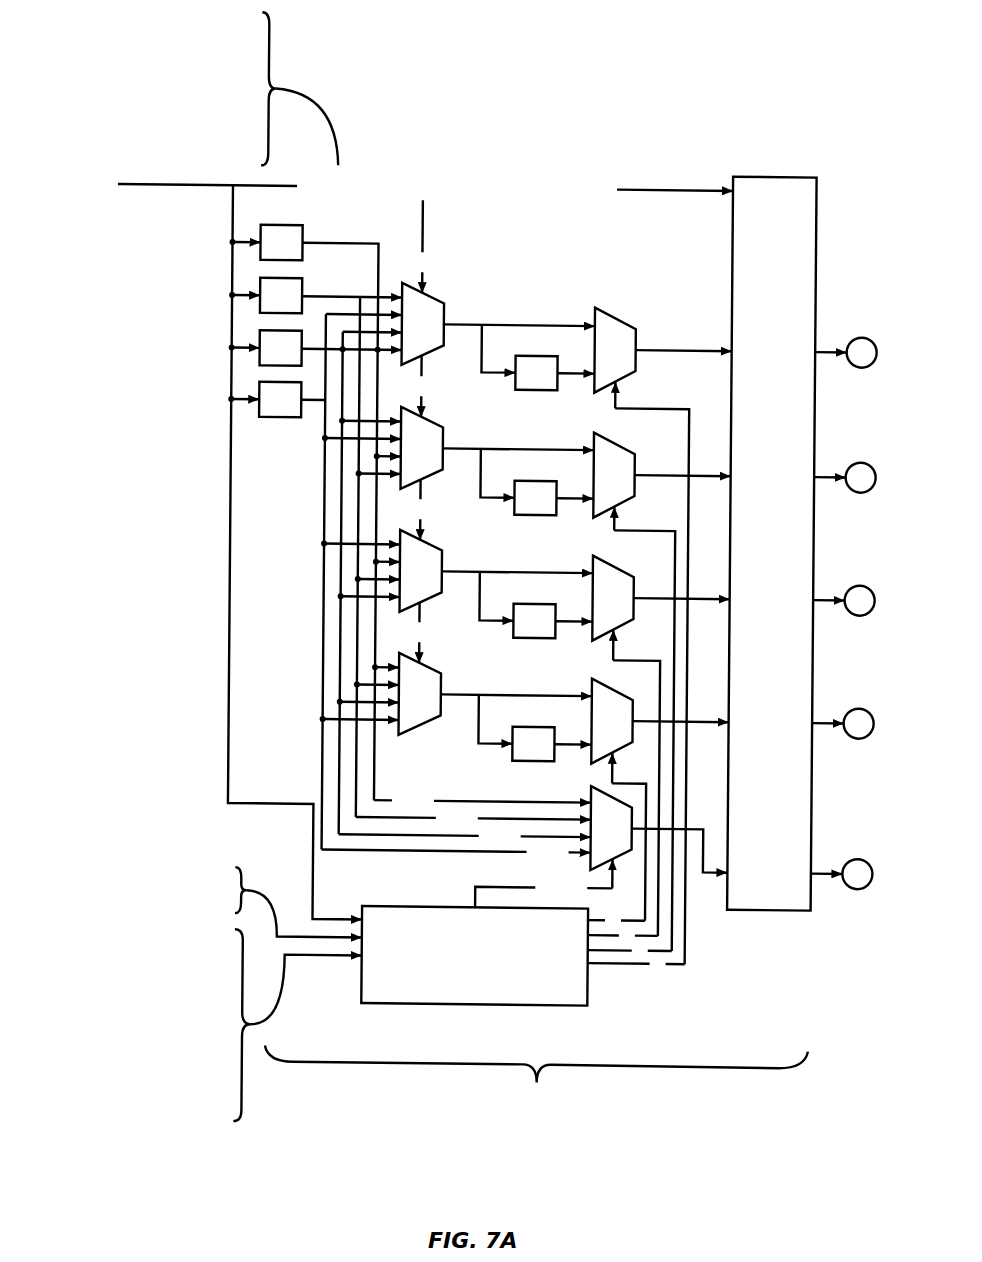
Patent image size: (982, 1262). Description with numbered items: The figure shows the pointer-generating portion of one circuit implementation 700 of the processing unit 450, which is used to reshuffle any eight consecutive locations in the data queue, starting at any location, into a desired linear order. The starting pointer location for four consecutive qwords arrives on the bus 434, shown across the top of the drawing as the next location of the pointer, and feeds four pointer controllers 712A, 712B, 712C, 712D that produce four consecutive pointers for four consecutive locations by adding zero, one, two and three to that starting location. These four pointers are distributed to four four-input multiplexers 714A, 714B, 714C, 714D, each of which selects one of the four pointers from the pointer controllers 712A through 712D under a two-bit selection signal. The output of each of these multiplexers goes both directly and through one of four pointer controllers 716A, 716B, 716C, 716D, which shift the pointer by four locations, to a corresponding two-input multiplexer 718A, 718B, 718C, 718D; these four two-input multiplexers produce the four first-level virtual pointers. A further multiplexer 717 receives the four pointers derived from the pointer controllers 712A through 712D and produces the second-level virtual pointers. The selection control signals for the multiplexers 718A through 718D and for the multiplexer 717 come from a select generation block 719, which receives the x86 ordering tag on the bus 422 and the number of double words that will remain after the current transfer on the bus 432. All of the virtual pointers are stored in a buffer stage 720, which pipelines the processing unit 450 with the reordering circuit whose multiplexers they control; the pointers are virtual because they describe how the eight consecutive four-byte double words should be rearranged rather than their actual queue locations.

The circuit implementation 700 is at (420, 43).
The bus 434 is at (193, 187).
The pointer controller 712A is at (257, 255).
The pointer controller 712B is at (257, 307).
The pointer controller 712C is at (257, 359).
The pointer controller 712D is at (257, 410).
The 4-input multiplexer 714A is at (446, 312).
The 4-input multiplexer 714B is at (446, 436).
The 4-input multiplexer 714C is at (446, 559).
The 4-input multiplexer 714D is at (446, 682).
The pointer controller 716A is at (537, 386).
The pointer controller 716B is at (537, 510).
The pointer controller 716C is at (537, 633).
The pointer controller 716D is at (539, 757).
The 2-input multiplexer 718A is at (597, 304).
The 2-input multiplexer 718B is at (597, 430).
The 2-input multiplexer 718C is at (597, 552).
The 2-input multiplexer 718D is at (597, 676).
The multiplexer 717 is at (597, 781).
The select generation block 719 is at (468, 992).
The buffer stage 720 is at (762, 655).
The bus 422 is at (175, 857).
The bus 432 is at (175, 1133).
The processing unit 450 is at (536, 1083).